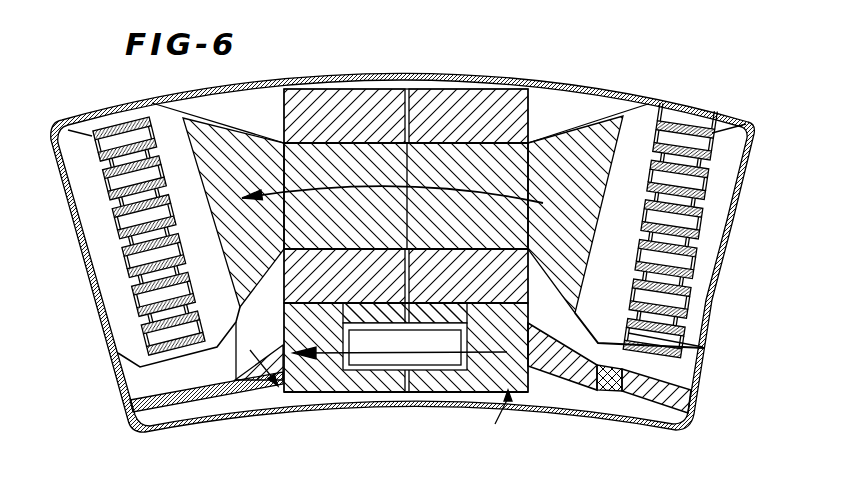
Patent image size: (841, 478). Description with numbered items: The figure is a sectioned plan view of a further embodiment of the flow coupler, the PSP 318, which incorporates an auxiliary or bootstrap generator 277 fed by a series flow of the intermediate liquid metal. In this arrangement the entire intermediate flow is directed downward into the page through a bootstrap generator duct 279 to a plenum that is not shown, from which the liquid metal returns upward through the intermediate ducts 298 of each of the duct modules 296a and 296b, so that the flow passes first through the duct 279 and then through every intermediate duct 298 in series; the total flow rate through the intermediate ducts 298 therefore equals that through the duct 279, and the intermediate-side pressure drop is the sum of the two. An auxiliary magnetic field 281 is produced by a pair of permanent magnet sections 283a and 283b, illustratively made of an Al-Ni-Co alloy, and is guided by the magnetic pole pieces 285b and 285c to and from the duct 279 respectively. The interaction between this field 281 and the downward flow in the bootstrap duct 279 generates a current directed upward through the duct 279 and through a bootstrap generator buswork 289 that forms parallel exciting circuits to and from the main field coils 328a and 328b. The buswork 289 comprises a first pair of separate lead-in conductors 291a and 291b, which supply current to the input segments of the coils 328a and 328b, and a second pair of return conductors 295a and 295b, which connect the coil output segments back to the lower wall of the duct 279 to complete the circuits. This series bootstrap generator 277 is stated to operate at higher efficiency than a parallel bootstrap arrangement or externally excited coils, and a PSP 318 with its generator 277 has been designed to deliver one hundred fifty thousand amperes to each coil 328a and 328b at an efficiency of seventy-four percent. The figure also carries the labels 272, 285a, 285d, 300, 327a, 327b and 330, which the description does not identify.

The flow direction arrow 272 is at (440, 187).
The bootstrap generator 277 is at (493, 418).
The bootstrap generator duct 279 is at (380, 360).
The auxiliary magnetic field 281 is at (327, 350).
The permanent magnet section 283a is at (168, 393).
The permanent magnet section 283b is at (627, 421).
The outer shell 285a is at (127, 421).
The magnetic pole piece 285b is at (258, 376).
The magnetic pole piece 285c is at (568, 380).
The right bottom band end segment 285d is at (688, 393).
The bootstrap generator buswork 289 is at (254, 358).
The lead-in conductor 291a is at (373, 302).
The lead-in conductor 291b is at (448, 304).
The return conductor 295a is at (317, 392).
The return conductor 295b is at (437, 385).
The duct module 296a is at (140, 82).
The duct module 296b is at (752, 112).
The intermediate duct 298 is at (657, 157).
The right pocket 300 is at (660, 132).
The PSP 318 is at (580, 63).
The upper right corner joint 327a is at (755, 120).
The lower right bracket 327b is at (672, 342).
The main field coil 328a is at (345, 102).
The main field coil 328b is at (477, 98).
The left wedge 330 is at (230, 133).